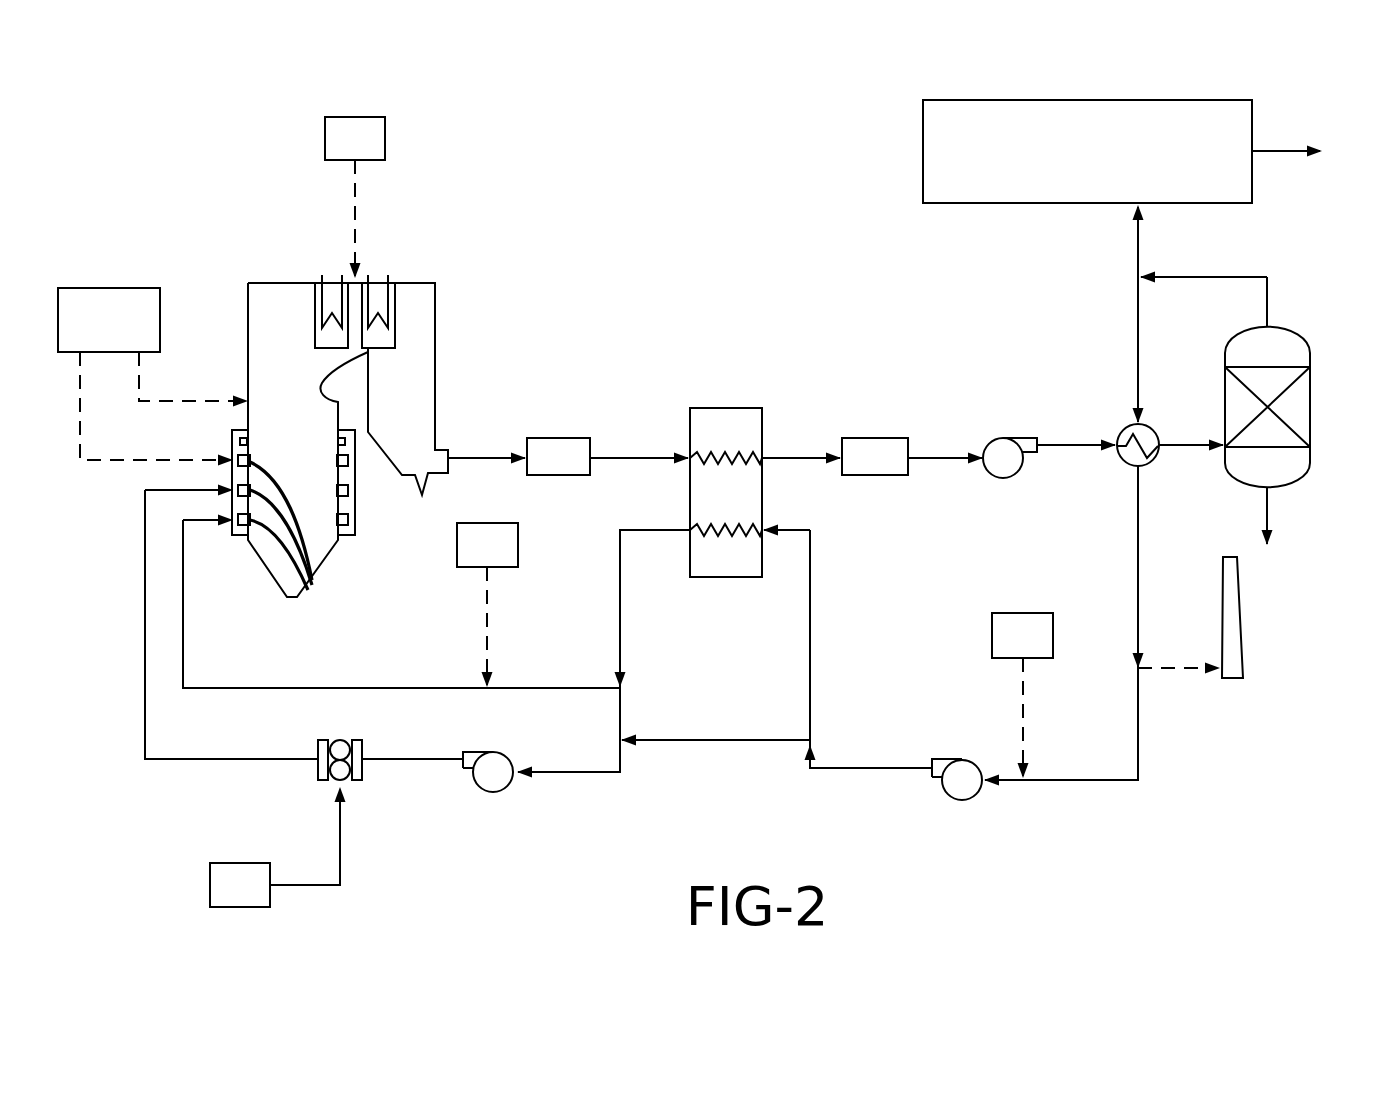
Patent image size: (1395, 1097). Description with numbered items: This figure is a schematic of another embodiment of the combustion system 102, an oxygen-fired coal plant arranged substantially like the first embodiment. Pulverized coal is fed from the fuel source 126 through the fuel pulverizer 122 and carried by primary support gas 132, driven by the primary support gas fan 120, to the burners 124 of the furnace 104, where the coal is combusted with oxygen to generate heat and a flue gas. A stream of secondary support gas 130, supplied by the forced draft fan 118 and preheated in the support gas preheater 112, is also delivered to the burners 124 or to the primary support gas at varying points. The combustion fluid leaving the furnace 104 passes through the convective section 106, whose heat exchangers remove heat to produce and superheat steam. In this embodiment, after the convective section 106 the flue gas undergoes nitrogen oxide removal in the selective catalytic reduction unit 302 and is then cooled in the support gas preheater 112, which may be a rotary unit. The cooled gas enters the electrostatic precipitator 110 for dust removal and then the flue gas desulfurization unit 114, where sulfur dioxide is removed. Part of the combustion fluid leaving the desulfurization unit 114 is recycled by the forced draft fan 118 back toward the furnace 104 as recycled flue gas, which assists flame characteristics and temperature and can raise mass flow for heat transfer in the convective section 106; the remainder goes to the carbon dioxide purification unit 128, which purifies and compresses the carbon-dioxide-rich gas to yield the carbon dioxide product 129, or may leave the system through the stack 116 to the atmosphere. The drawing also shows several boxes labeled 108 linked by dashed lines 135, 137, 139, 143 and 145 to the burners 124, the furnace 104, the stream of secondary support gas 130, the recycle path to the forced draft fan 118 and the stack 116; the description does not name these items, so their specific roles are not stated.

The combustion system 102 is at (136, 200).
The furnace 104 is at (270, 550).
The convective section 106 is at (331, 278).
The controller 108 is at (555, 387).
The electrostatic precipitator 110 is at (873, 438).
The support gas preheater 112 is at (720, 408).
The flue gas desulfurization unit 114 is at (1312, 390).
The stack 116 is at (1243, 652).
The forced draft fan 118 is at (952, 797).
The primary support gas fan 120 is at (500, 790).
The fuel pulverizer 122 is at (360, 740).
The burners 124 is at (302, 565).
The fuel source 126 is at (278, 847).
The CO2 purification unit 128 is at (1087, 151).
The CO2 product 129 is at (1270, 149).
The stream of secondary support gas 130 is at (556, 688).
The primary support gas 132 is at (572, 773).
The control signal 135 is at (112, 462).
The control signal 137 is at (163, 401).
The control signal 139 is at (355, 217).
The control signal 143 is at (1023, 713).
The control signal 145 is at (487, 635).
The selective catalytic reduction unit 302 is at (557, 438).